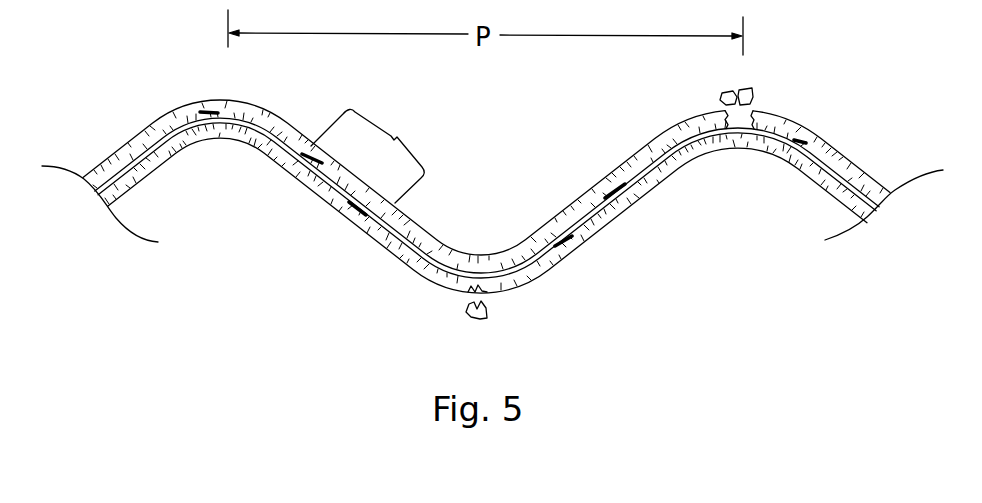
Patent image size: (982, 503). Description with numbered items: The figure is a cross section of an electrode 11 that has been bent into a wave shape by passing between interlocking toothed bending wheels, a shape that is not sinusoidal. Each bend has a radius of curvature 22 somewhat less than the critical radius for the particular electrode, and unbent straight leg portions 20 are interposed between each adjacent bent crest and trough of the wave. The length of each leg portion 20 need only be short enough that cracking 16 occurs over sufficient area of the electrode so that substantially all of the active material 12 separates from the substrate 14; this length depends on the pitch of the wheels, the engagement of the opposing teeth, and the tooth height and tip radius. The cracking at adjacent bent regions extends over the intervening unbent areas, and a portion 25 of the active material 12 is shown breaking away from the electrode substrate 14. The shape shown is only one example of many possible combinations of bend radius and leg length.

The electrode 11 is at (268, 285).
The active material 12 is at (827, 138).
The substrate 14 is at (843, 183).
The cracking 16 is at (247, 107).
The leg portion 20 is at (367, 155).
The radius of curvature 22 is at (186, 133).
The portion of active material 25 is at (478, 315).